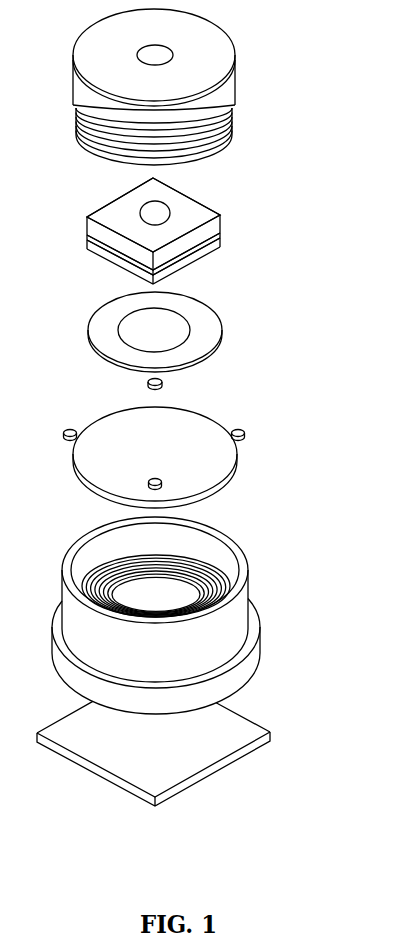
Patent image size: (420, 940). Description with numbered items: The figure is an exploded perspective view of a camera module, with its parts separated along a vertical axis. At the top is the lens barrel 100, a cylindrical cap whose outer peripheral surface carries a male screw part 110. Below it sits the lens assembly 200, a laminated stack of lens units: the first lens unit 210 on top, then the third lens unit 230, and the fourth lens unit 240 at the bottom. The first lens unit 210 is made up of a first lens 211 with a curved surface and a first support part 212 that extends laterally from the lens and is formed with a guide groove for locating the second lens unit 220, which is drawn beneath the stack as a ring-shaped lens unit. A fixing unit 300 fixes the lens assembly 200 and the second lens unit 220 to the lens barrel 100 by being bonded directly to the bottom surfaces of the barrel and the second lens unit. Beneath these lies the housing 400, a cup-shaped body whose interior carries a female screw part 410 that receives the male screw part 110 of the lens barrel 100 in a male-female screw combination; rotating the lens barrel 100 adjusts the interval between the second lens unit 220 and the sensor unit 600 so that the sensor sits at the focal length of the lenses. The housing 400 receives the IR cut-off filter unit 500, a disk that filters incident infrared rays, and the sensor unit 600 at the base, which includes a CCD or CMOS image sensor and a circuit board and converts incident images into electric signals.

The lens barrel 100 is at (250, 66).
The male screw part 110 is at (228, 128).
The lens assembly 200 is at (203, 230).
The first lens unit 210 is at (222, 223).
The first lens 211 is at (158, 205).
The first support part 212 is at (198, 205).
The second lens unit 220 is at (240, 326).
The third lens unit 230 is at (222, 237).
The fourth lens unit 240 is at (222, 249).
The fixing unit 300 is at (245, 431).
The housing 400 is at (184, 608).
The female screw part 410 is at (157, 560).
The IR cut-off filter unit 500 is at (225, 470).
The sensor unit 600 is at (240, 718).